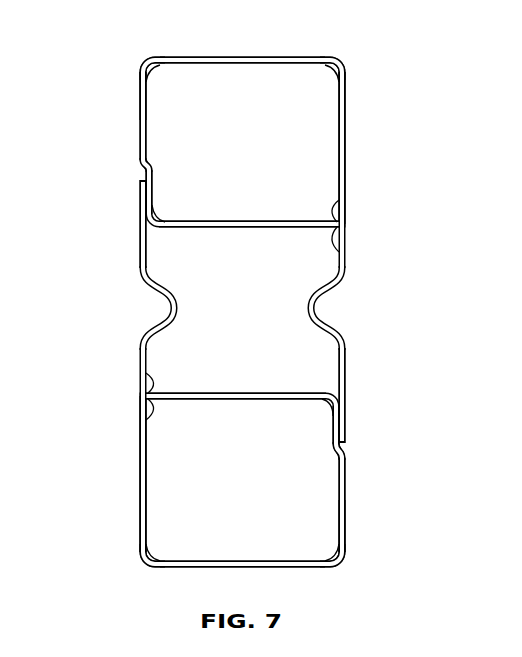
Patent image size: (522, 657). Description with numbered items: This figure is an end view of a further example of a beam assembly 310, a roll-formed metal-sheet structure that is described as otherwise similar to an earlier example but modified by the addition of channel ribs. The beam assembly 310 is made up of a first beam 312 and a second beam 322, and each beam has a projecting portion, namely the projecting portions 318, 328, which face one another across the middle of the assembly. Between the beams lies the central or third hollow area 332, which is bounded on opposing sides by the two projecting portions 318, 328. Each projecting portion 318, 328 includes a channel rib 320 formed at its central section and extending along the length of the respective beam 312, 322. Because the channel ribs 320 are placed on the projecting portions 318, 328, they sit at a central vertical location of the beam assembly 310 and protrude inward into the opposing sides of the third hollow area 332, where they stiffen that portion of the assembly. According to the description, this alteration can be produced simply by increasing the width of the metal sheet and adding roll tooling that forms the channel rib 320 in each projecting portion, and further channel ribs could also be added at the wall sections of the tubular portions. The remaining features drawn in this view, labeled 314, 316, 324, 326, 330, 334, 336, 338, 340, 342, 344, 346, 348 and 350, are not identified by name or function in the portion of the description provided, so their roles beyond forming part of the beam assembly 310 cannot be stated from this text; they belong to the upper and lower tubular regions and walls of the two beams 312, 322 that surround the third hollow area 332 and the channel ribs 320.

The beam assembly 310 is at (110, 73).
The beam 312 is at (318, 52).
The second end 314 is at (176, 53).
The first loop portion 316 is at (262, 161).
The projecting portion 318 is at (347, 368).
The channel rib 320 is at (172, 309).
The beam 322 is at (176, 571).
The fourth end 324 is at (313, 571).
The second loop portion 326 is at (262, 484).
The projecting portion 328 is at (138, 238).
The inner wall segment 330 is at (138, 197).
The third hollow area 332 is at (262, 318).
The cross wall 334 is at (253, 221).
The outer wall segment 336 is at (138, 110).
The end wall 338 is at (243, 57).
The side wall 340 is at (347, 155).
The rounded corner 342 is at (148, 66).
The first fillet 344 is at (343, 204).
The second fillet 346 is at (343, 253).
The offset step 348 is at (138, 168).
The wall edge 350 is at (138, 82).